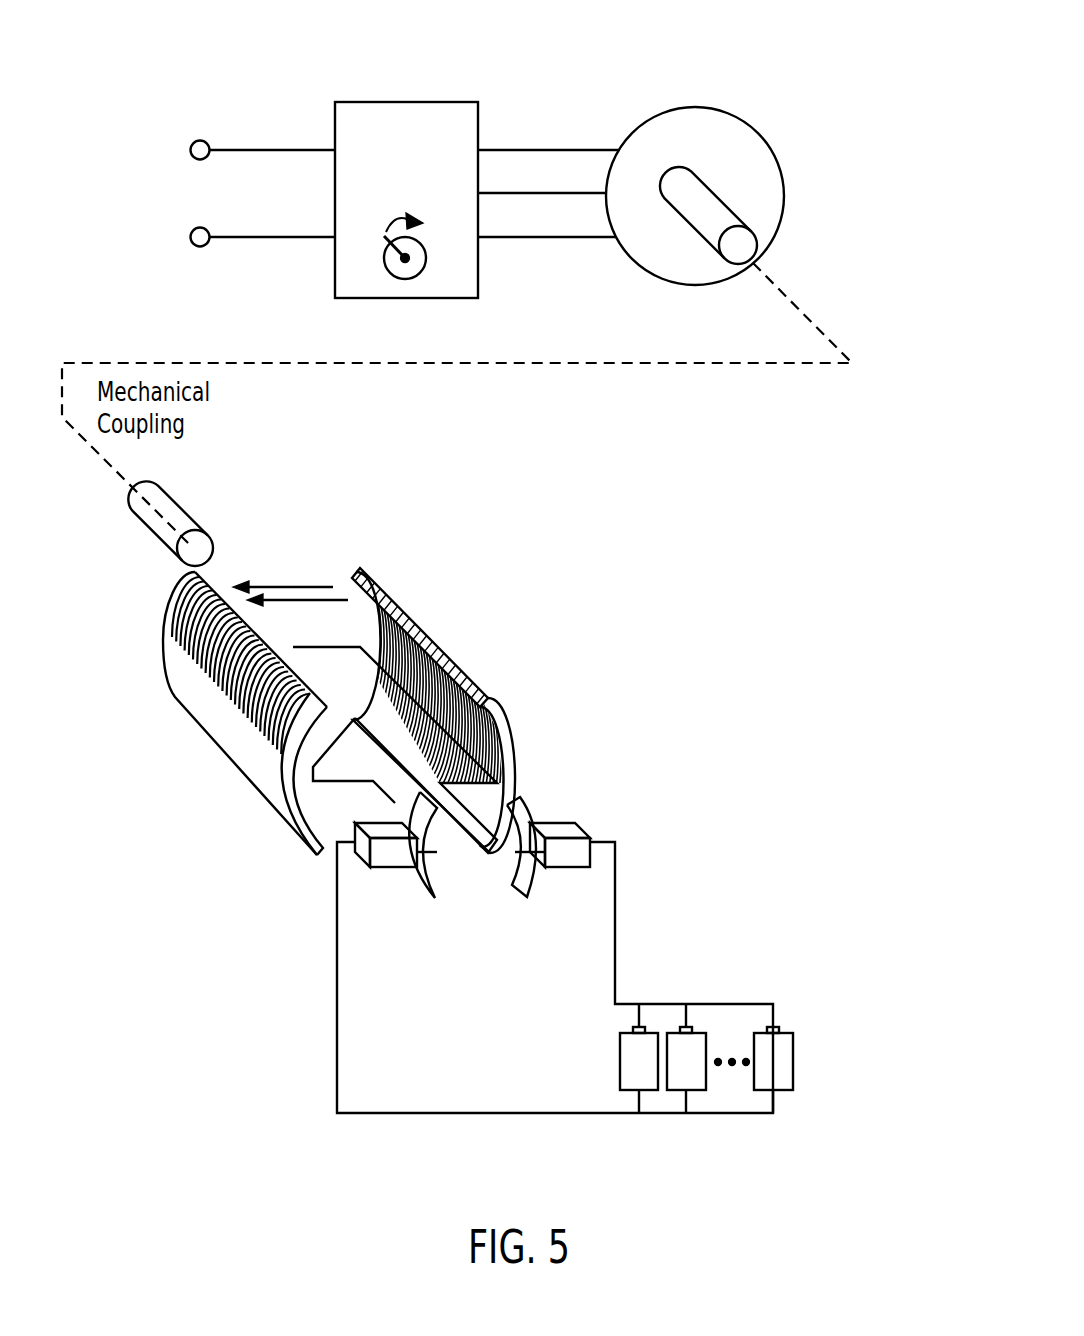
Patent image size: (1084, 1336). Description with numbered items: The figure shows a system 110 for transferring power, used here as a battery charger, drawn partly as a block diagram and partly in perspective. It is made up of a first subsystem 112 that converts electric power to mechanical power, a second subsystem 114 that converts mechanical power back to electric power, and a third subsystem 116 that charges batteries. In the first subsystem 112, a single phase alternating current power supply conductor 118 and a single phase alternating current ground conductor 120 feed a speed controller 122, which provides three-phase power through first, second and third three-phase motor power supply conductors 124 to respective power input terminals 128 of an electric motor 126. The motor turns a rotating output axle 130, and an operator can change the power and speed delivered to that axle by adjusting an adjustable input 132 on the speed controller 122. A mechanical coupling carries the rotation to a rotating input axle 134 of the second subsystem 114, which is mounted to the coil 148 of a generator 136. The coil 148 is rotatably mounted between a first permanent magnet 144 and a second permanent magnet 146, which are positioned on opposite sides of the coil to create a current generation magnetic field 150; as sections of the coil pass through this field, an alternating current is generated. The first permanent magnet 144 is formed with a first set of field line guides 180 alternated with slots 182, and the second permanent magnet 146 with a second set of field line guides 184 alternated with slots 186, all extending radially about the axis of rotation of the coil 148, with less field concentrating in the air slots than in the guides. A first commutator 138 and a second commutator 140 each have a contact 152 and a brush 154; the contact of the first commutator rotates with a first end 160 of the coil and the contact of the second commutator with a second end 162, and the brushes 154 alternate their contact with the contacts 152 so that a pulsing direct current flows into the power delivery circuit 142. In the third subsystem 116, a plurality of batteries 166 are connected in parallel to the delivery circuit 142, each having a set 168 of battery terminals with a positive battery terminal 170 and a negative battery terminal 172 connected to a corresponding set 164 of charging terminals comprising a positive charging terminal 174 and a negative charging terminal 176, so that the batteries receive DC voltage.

The system for transferring power 110 is at (135, 62).
The first subsystem 112 is at (122, 207).
The second subsystem 114 is at (133, 728).
The third subsystem 116 is at (613, 1144).
The single phase alternating current power supply conductor 118 is at (262, 150).
The single phase alternating current ground conductor 120 is at (285, 237).
The speed controller 122 is at (405, 102).
The three-phase motor power supply conductors 124 is at (548, 215).
The electric motor 126 is at (756, 68).
The power input terminal 128 is at (619, 149).
The rotating output axle 130 is at (755, 230).
The adjustable input 132 is at (405, 299).
The rotating input axle 134 is at (206, 524).
The generator 136 is at (505, 545).
The first commutator 138 is at (552, 923).
The second commutator 140 is at (403, 923).
The power delivery circuit 142 is at (409, 1144).
The first permanent magnet 144 is at (458, 710).
The second permanent magnet 146 is at (271, 800).
The coil 148 is at (307, 647).
The current generation magnetic field 150 is at (290, 581).
The contact 152 is at (420, 886).
The brush 154 is at (375, 822).
The first end 160 is at (506, 859).
The second end 162 is at (437, 853).
The set of charging terminals 164 is at (728, 1059).
The battery 166 is at (785, 1057).
The set of battery terminals 168 is at (556, 1030).
The positive battery terminal 170 is at (633, 1028).
The negative battery terminal 172 is at (637, 1090).
The positive charging terminal 174 is at (640, 1013).
The negative charging terminal 176 is at (642, 1100).
The field line guides 180 is at (408, 622).
The slots 182 is at (423, 634).
The field line guides 184 is at (306, 678).
The slots 186 is at (313, 693).